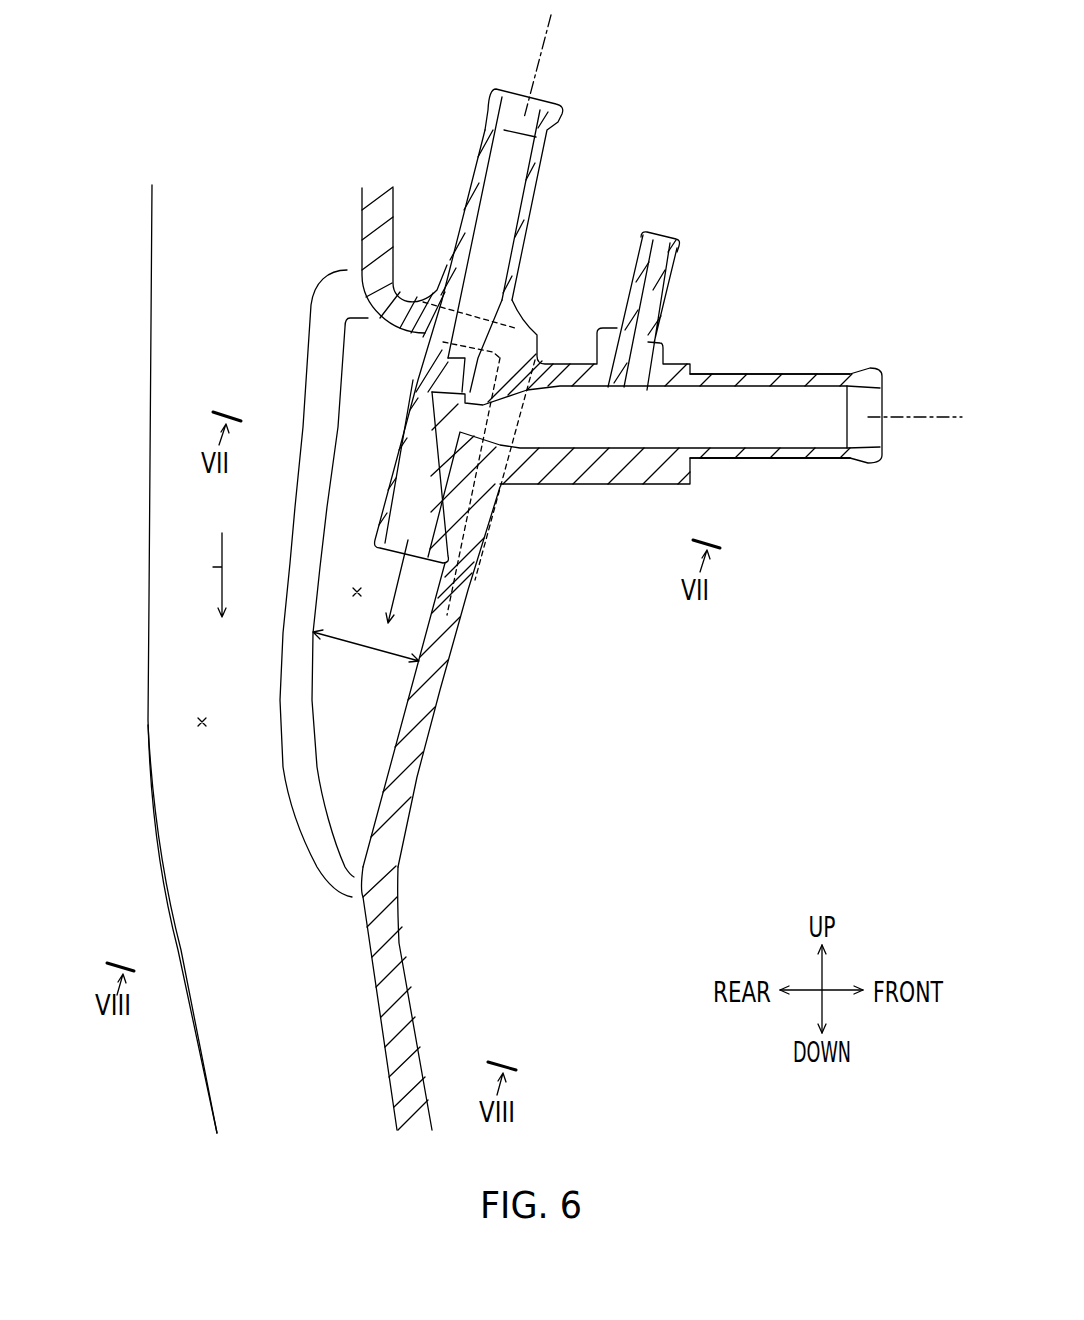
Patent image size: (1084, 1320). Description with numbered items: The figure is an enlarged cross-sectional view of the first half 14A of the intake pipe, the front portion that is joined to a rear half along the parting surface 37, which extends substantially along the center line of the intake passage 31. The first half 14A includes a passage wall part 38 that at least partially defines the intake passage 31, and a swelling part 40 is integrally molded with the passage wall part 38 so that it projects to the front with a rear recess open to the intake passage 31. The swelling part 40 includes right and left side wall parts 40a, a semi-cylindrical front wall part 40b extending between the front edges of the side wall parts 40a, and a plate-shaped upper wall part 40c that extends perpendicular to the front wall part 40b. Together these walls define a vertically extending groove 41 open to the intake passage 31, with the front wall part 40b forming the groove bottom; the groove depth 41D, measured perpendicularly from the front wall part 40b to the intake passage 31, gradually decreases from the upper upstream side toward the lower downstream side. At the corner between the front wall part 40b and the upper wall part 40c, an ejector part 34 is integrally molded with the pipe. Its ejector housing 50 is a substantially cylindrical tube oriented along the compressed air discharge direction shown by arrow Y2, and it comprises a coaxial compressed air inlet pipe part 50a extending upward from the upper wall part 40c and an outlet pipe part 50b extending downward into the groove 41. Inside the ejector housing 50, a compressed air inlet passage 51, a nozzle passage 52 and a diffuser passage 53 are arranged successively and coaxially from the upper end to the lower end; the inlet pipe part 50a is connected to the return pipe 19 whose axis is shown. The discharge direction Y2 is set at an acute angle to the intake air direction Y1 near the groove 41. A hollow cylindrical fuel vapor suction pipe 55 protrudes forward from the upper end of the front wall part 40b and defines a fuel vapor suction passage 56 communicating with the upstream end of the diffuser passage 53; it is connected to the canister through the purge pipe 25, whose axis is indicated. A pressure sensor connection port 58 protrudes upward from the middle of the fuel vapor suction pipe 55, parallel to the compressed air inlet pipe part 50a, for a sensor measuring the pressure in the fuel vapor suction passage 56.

The first half 14A is at (133, 605).
The return pipe 19 is at (548, 52).
The purge pipe 25 is at (918, 412).
The intake passage 31 is at (198, 722).
The ejector part 34 is at (586, 251).
The parting surface 37 is at (147, 700).
The passage wall part 38 is at (413, 755).
The swelling part 40 is at (546, 334).
The side wall parts 40a is at (365, 363).
The front wall part 40b is at (477, 527).
The upper wall part 40c is at (412, 305).
The groove 41 is at (353, 592).
The groove depth 41D is at (366, 659).
The ejector housing 50 is at (399, 421).
The compressed air inlet pipe part 50a is at (472, 143).
The outlet pipe part 50b is at (402, 460).
The compressed air inlet passage 51 is at (511, 103).
The nozzle passage 52 is at (476, 320).
The diffuser passage 53 is at (427, 483).
The fuel vapor suction pipe 55 is at (760, 464).
The fuel vapor suction passage 56 is at (793, 405).
The pressure sensor connection port 58 is at (668, 268).
The direction of intake air Y1 is at (213, 567).
The direction of compressed air discharge Y2 is at (400, 587).